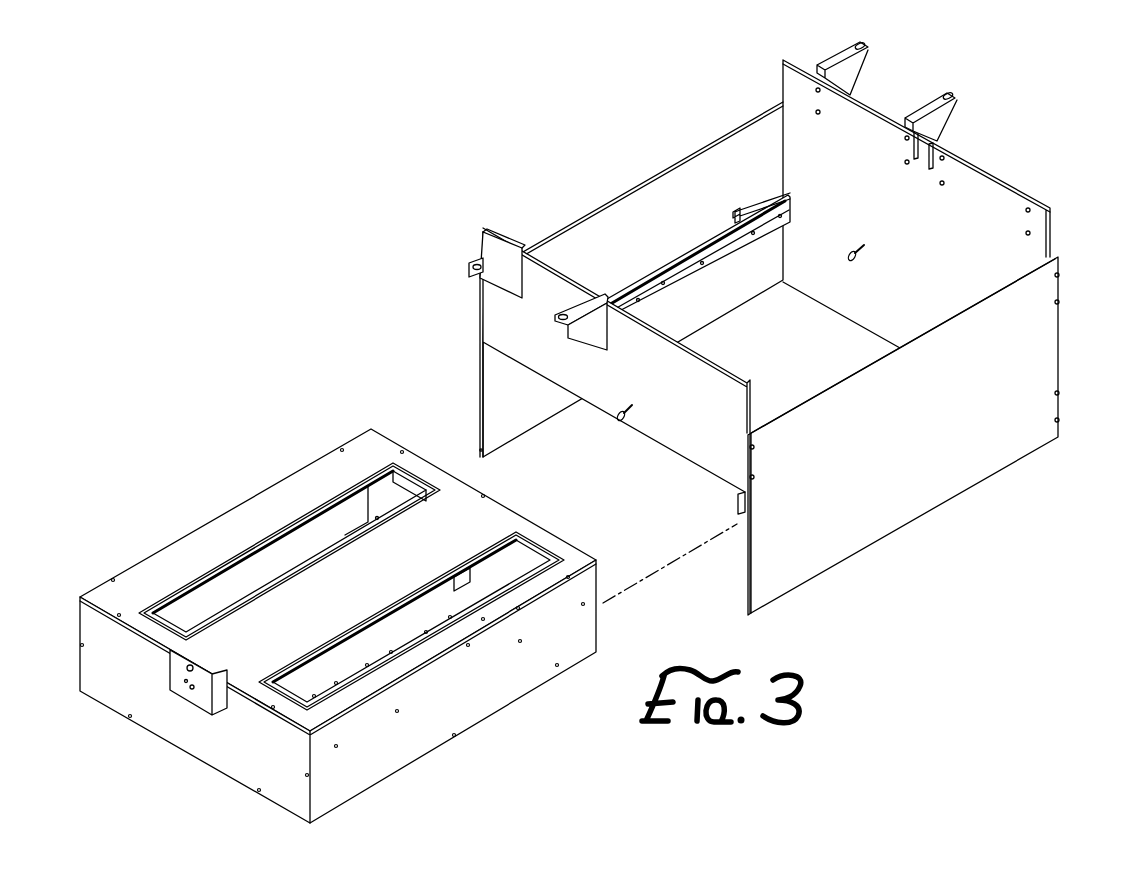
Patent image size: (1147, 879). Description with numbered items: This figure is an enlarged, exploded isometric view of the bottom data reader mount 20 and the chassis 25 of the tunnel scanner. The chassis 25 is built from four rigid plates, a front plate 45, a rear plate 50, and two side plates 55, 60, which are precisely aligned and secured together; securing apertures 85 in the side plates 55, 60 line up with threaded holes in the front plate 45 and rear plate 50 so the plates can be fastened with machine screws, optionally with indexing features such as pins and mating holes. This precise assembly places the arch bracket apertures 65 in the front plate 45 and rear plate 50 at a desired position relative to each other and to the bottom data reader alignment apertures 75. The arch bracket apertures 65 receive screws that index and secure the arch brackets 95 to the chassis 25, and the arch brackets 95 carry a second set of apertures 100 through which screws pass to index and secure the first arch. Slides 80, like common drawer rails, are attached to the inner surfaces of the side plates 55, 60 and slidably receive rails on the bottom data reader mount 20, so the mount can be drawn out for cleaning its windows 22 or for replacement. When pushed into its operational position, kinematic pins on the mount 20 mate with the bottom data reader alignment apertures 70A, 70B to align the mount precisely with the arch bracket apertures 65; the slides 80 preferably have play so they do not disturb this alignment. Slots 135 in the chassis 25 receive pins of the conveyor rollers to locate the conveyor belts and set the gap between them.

The bottom data reader mount 20 is at (338, 606).
The windows 22 is at (397, 490).
The chassis 25 is at (751, 333).
The front plate 45 is at (716, 462).
The rear plate 50 is at (1052, 226).
The side plate 55 is at (947, 485).
The side plate 60 is at (614, 218).
The arch bracket apertures 65 is at (905, 161).
The bottom data reader alignment aperture 70A is at (626, 417).
The bottom data reader alignment aperture 70B is at (860, 249).
The bottom data reader alignment apertures 75 is at (1020, 374).
The slides 80 is at (680, 272).
The securing apertures 85 is at (1056, 303).
The arch brackets 95 is at (588, 305).
The second set of apertures 100 is at (478, 264).
The slots 135 is at (907, 136).